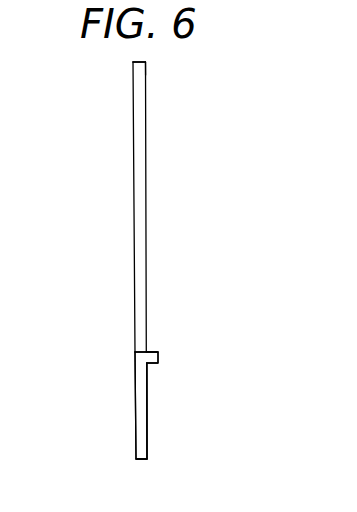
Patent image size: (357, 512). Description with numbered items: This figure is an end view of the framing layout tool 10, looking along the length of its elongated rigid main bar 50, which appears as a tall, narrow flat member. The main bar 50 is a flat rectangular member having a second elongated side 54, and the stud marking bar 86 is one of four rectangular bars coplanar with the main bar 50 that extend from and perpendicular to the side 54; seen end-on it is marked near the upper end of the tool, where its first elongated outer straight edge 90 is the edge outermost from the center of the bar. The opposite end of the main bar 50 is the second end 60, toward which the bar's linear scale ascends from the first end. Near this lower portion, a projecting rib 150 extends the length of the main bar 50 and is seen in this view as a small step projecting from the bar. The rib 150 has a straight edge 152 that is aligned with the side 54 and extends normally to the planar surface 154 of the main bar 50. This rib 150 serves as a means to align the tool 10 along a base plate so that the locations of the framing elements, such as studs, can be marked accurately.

The layout tool 10 is at (170, 98).
The stud marking bar 86 is at (138, 61).
The first elongated outer straight edge 90 is at (141, 177).
The straight edge 152 is at (151, 351).
The projecting rib 150 is at (160, 357).
The second elongated side 54 is at (128, 346).
The second end 60 is at (174, 396).
The planar surface 154 is at (149, 417).
The main bar 50 is at (136, 437).